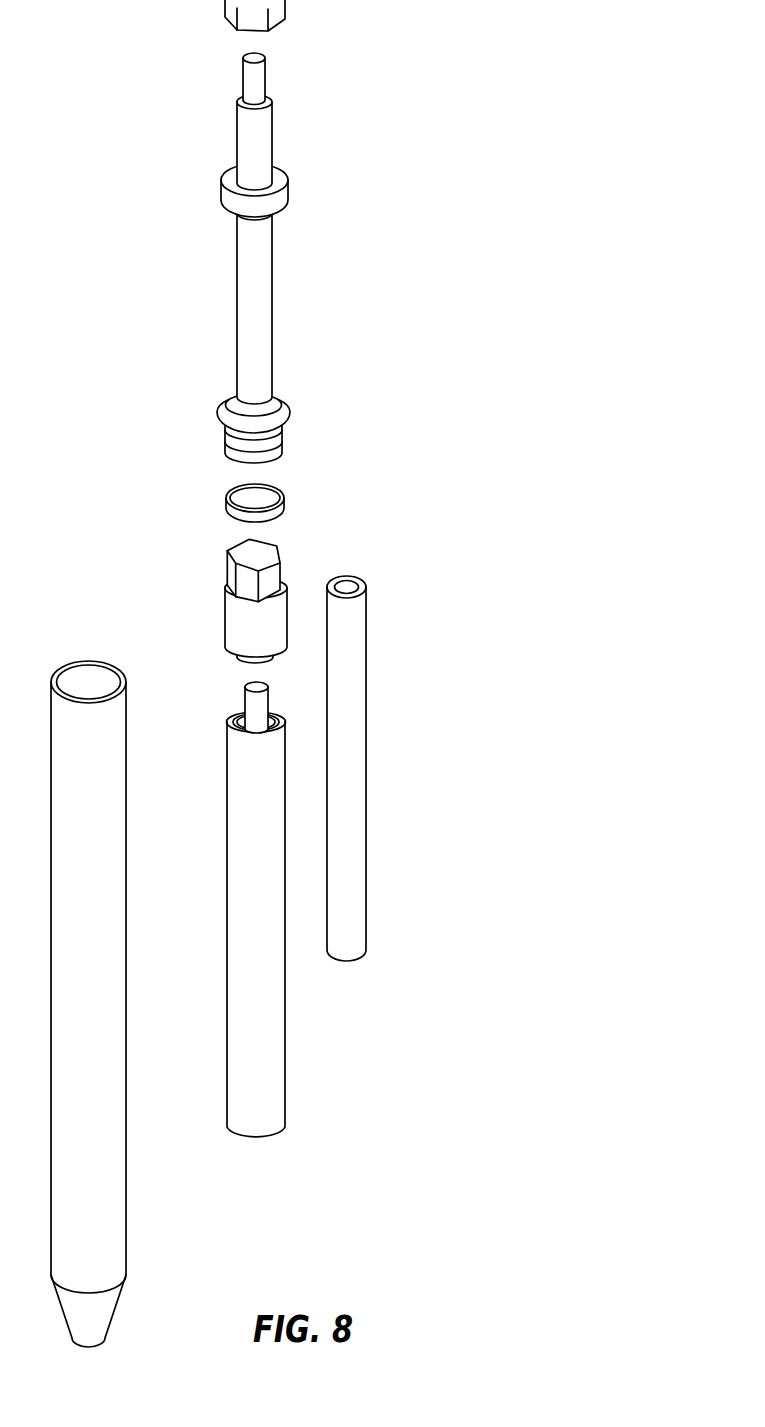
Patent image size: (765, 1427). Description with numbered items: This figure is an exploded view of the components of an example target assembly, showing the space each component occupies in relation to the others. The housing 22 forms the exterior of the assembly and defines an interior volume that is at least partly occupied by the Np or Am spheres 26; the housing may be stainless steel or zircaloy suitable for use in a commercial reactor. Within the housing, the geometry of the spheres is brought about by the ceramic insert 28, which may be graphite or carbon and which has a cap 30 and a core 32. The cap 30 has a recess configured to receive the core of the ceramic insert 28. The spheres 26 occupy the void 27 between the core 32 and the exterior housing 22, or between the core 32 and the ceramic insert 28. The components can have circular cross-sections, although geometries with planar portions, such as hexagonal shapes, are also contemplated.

The housing 22 is at (95, 963).
The spheres 26 is at (348, 692).
The void 27 is at (230, 710).
The ceramic insert 28 is at (270, 1043).
The cap 30 is at (268, 622).
The core 32 is at (252, 707).